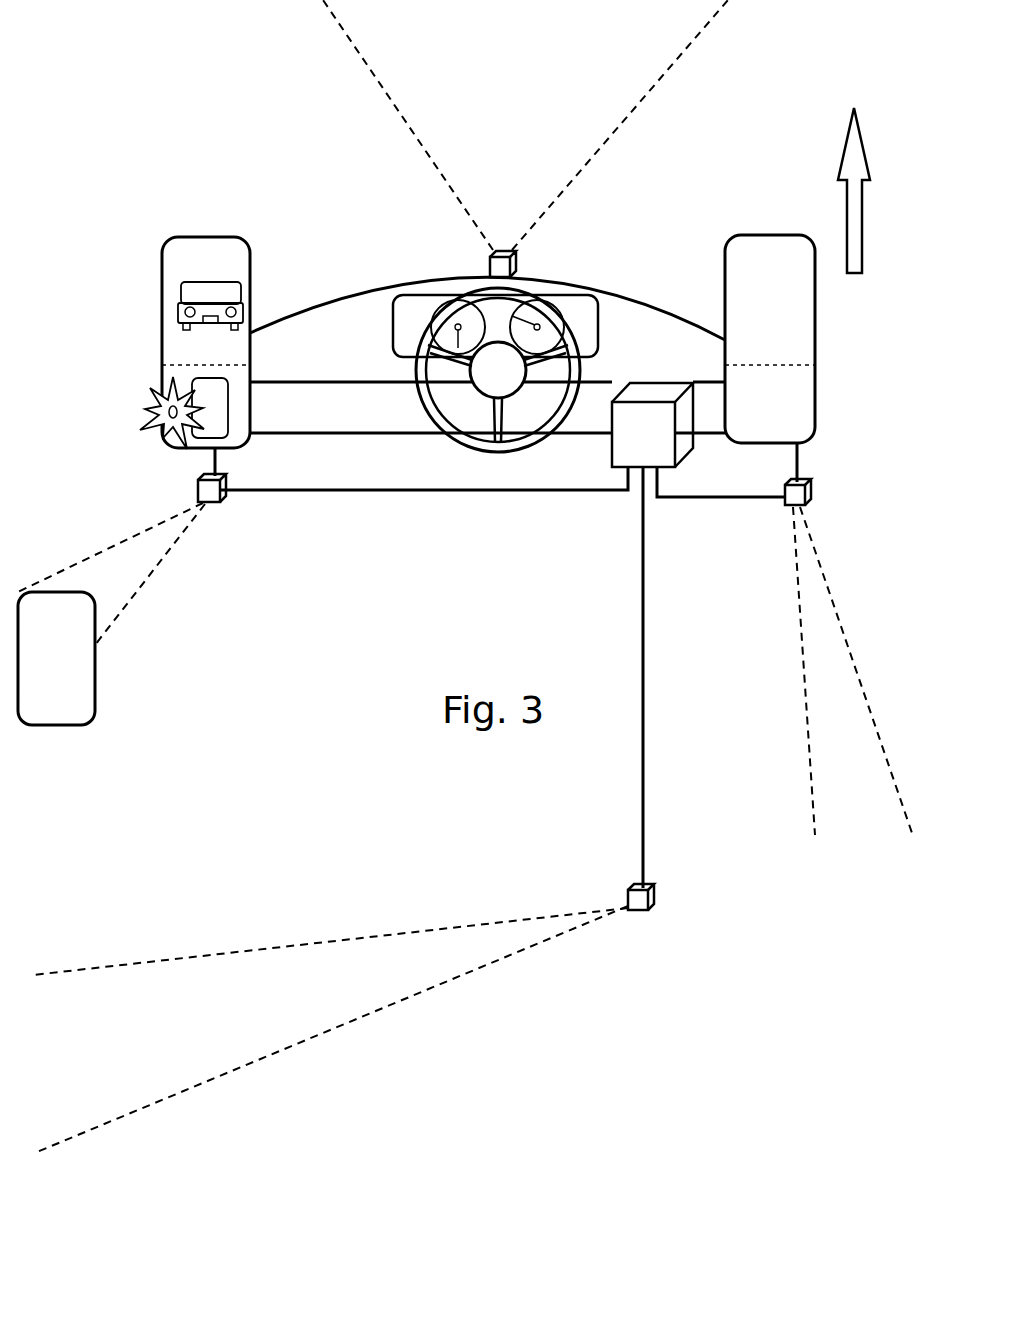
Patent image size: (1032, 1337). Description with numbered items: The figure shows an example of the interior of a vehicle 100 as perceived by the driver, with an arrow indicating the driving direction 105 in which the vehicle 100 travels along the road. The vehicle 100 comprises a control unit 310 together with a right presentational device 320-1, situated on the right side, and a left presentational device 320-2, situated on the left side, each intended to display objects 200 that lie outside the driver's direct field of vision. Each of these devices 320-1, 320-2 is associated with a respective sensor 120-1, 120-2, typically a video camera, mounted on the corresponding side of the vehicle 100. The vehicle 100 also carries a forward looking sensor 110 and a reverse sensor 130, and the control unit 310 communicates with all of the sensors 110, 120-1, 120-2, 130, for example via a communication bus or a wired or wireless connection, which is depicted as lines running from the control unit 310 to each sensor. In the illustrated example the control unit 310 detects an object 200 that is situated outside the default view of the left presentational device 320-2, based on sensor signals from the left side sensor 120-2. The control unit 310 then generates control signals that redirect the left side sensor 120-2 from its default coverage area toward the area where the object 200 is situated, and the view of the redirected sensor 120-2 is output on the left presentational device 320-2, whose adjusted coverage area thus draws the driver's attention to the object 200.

The vehicle 100 is at (318, 330).
The driving direction 105 is at (879, 190).
The forward looking sensor 110 is at (512, 262).
The right side sensor 120-1 is at (805, 493).
The left side sensor 120-2 is at (198, 488).
The reverse sensor 130 is at (655, 900).
The object 200 is at (56, 658).
The control unit 310 is at (503, 635).
The right presentational device 320-1 is at (815, 420).
The left presentational device 320-2 is at (162, 270).